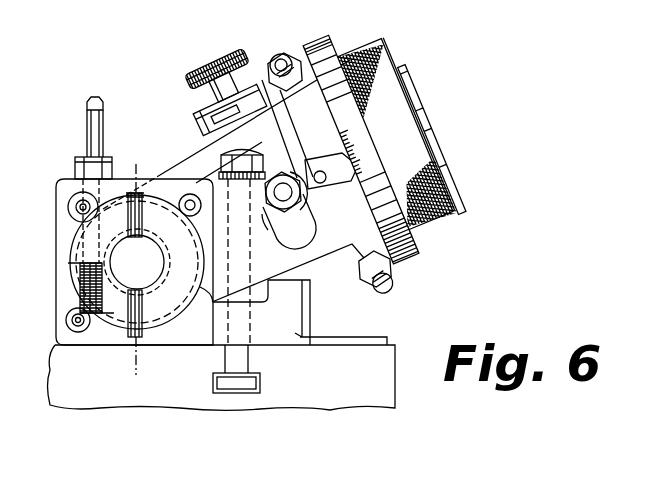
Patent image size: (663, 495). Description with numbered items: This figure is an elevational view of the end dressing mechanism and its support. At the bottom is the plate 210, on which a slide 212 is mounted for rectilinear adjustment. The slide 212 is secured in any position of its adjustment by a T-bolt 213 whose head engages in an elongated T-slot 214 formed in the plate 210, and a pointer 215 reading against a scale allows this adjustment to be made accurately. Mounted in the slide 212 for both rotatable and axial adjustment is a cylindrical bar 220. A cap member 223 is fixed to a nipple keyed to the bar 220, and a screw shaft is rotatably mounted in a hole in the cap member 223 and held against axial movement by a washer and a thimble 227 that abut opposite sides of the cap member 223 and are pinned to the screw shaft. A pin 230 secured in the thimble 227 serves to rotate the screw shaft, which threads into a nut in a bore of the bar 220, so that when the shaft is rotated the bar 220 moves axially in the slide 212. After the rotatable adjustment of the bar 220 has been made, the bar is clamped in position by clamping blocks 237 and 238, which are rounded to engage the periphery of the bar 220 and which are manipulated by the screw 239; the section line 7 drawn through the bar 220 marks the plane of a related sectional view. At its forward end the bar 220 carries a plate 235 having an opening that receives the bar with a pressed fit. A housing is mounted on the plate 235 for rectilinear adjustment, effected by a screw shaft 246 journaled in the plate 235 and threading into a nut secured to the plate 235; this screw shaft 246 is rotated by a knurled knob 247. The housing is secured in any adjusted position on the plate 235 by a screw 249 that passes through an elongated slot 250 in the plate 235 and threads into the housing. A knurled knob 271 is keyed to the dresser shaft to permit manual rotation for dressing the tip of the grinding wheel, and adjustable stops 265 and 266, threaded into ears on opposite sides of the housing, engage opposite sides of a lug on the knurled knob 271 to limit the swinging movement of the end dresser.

The section line 7- 7 is at (135, 269).
The plate 210 is at (88, 401).
The slide 212 is at (287, 323).
The T-bolt 213 is at (228, 327).
The T-slot 214 is at (243, 394).
The pointer 215 is at (360, 342).
The cylindrical bar 220 is at (157, 281).
The cap member 223 is at (182, 232).
The thimble 227 is at (152, 263).
The pin 230 is at (145, 205).
The plate 235 is at (182, 161).
The clamping block 237 is at (118, 190).
The clamping block 238 is at (120, 298).
The screw 239 is at (83, 162).
The screw shaft 246 is at (243, 84).
The knurled knob 247 is at (187, 80).
The screw 249 is at (285, 172).
The elongated slot 250 is at (303, 247).
The adjustable stop 265 is at (284, 62).
The adjustable stop 266 is at (394, 292).
The knurled knob 271 is at (367, 48).